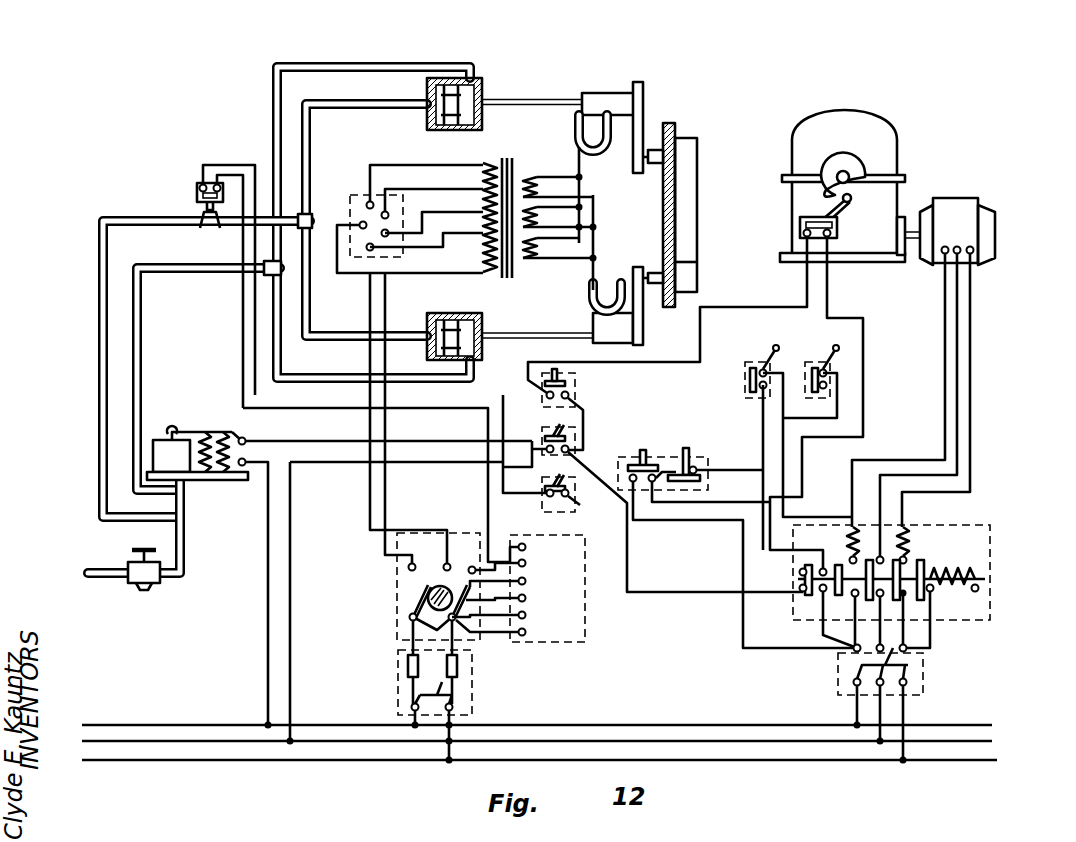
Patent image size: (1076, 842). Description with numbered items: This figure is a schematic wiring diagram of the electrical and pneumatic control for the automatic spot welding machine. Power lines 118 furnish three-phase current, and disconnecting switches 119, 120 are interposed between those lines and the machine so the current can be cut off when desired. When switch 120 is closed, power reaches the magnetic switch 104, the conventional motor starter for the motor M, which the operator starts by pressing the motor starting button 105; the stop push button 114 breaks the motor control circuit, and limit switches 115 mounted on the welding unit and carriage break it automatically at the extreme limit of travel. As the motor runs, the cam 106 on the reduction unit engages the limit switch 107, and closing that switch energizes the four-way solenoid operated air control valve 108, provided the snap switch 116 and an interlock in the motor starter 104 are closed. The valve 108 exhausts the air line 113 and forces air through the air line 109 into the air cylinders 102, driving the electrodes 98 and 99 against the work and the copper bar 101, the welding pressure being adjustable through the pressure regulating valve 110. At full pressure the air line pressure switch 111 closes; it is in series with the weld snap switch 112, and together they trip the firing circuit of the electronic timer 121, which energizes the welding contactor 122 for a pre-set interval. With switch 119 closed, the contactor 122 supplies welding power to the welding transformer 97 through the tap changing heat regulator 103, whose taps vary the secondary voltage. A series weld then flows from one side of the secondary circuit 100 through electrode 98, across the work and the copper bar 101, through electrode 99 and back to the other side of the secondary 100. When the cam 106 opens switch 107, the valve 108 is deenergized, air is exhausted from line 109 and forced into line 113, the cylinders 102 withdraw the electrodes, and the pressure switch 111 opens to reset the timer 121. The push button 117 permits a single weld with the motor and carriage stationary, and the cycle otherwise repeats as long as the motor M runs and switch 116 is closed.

The welding transformer 97 is at (505, 188).
The electrode 98 is at (672, 150).
The electrode 99 is at (676, 270).
The secondary circuit 100 is at (572, 242).
The copper bar 101 is at (688, 213).
The air cylinders 102 is at (470, 312).
The heat regulator 103 is at (357, 200).
The magnetic switch 104 is at (965, 562).
The motor starting button 105 is at (643, 460).
The cam 106 is at (866, 165).
The limit switch 107 is at (832, 224).
The four-way solenoid operated air control valve 108 is at (195, 480).
The air line 109 is at (98, 346).
The pressure regulating valve 110 is at (152, 583).
The air line pressure switch 111 is at (200, 183).
The weld snap switch 112 is at (570, 500).
The air line 113 is at (140, 353).
The stop push button 114 is at (692, 462).
The limit switches 115 is at (772, 362).
The snap switch 116 is at (572, 438).
The push button 117 is at (572, 384).
The power lines 118 is at (578, 748).
The disconnecting switch 119 is at (460, 697).
The disconnecting switch 120 is at (910, 682).
The electronic timer 121 is at (566, 606).
The welding contactor 122 is at (397, 601).
The motor M is at (978, 210).